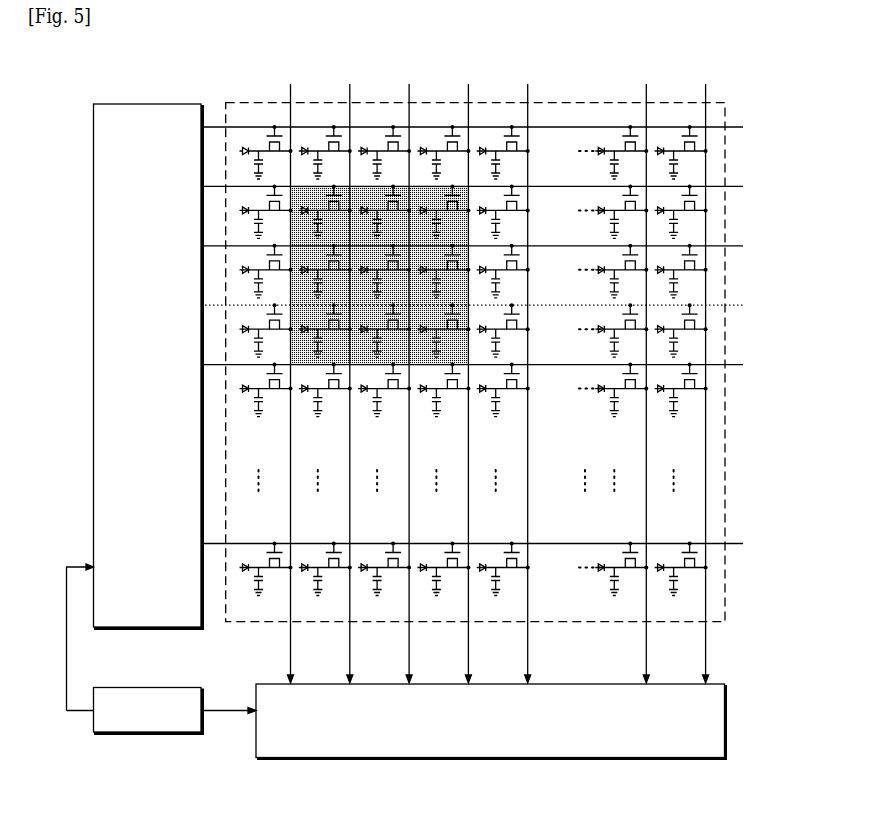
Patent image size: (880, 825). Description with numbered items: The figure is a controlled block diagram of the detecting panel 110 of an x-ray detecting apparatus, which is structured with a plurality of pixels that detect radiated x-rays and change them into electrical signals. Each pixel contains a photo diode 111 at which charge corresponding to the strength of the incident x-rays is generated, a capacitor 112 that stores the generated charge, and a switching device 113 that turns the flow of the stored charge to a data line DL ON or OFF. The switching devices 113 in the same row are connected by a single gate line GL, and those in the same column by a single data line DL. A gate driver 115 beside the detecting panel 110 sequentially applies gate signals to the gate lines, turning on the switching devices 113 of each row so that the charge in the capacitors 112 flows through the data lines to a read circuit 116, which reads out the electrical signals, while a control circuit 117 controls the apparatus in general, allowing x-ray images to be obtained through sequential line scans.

The detecting panel 110 is at (578, 102).
The photo diode 111 is at (242, 140).
The capacitor 112 is at (262, 166).
The switching device 113 is at (270, 124).
The gate driver 115 is at (181, 104).
The read circuit 116 is at (726, 723).
The control circuit 117 is at (174, 686).